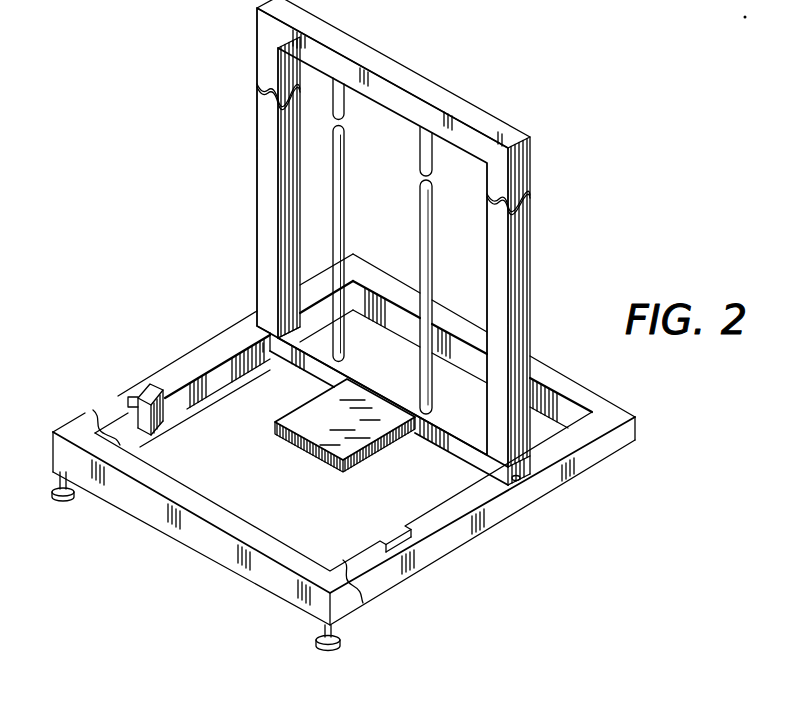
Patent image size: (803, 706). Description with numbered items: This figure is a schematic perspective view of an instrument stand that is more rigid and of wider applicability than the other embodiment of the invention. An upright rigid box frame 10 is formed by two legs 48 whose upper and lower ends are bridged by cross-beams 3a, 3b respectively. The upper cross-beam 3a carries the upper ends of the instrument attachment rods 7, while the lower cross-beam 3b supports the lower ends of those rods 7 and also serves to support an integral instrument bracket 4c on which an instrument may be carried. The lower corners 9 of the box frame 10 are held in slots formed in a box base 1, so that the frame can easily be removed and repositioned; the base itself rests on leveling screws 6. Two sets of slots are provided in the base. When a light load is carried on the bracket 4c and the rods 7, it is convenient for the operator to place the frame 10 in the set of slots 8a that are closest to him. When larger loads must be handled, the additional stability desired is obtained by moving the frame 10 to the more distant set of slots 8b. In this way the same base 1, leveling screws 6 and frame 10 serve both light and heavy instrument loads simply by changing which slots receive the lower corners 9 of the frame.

The box base 1 is at (213, 553).
The cross-beam 3a is at (334, 40).
The cross-beam 3b is at (455, 455).
The instrument bracket 4c is at (312, 432).
The leveling screws 6 is at (340, 641).
The instrument attachment rods 7 is at (345, 173).
The slots 8a is at (140, 390).
The slots 8b is at (252, 327).
The lower corners 9 is at (262, 350).
The box frame 10 is at (410, 251).
The legs 48 is at (259, 190).